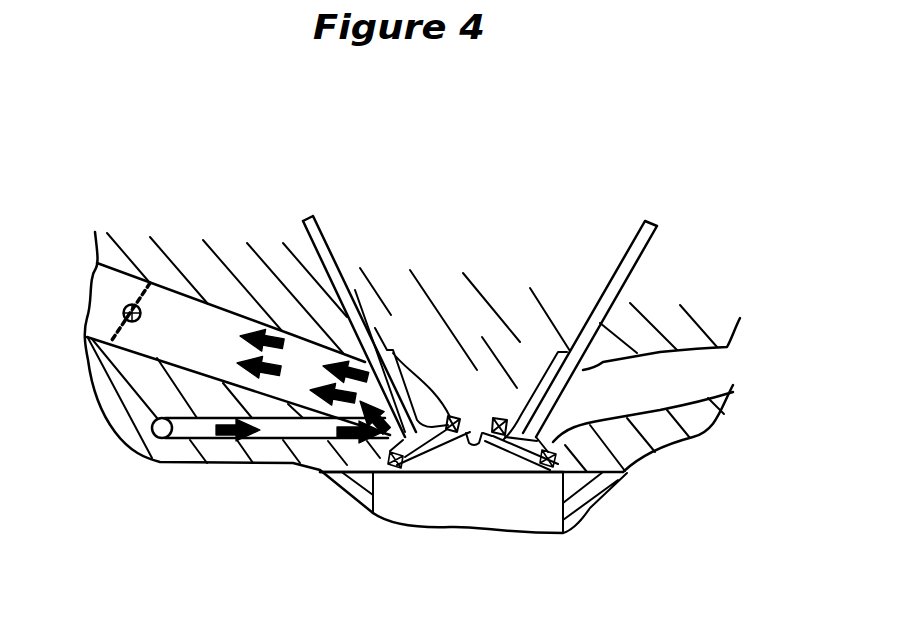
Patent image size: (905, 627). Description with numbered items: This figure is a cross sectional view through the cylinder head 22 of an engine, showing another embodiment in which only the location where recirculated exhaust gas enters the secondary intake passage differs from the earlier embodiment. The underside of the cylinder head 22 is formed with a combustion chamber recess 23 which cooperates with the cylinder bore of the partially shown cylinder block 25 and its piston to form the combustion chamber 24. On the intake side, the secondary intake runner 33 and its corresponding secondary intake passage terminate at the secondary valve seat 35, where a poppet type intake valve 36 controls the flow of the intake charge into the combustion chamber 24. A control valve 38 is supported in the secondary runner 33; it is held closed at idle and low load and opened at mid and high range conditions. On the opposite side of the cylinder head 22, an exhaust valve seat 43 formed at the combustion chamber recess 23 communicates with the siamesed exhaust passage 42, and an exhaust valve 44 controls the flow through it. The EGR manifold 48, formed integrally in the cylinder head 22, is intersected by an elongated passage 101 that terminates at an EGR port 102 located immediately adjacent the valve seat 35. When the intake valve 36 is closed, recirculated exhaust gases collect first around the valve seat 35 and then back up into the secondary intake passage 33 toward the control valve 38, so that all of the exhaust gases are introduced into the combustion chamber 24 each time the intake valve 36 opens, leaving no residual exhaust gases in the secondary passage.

The cylinder head 22 is at (687, 423).
The combustion chamber recess 23 is at (478, 433).
The combustion chamber 24 is at (482, 457).
The cylinder block 25 is at (602, 502).
The secondary intake runner 33 is at (213, 332).
The secondary valve seat 35 is at (413, 475).
The intake valve 36 is at (342, 280).
The control valve 38 is at (113, 324).
The exhaust passage 42 is at (720, 377).
The exhaust valve seat 43 is at (533, 462).
The exhaust valve 44 is at (640, 252).
The EGR manifold 48 is at (162, 438).
The elongated passage 101 is at (275, 437).
The EGR port 102 is at (390, 458).